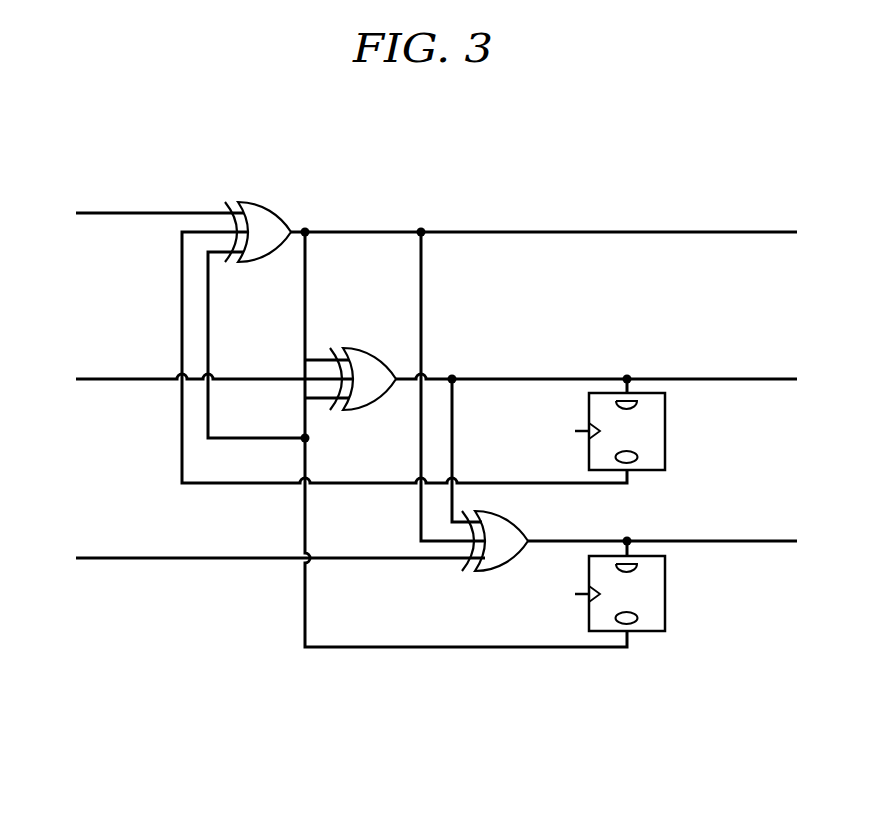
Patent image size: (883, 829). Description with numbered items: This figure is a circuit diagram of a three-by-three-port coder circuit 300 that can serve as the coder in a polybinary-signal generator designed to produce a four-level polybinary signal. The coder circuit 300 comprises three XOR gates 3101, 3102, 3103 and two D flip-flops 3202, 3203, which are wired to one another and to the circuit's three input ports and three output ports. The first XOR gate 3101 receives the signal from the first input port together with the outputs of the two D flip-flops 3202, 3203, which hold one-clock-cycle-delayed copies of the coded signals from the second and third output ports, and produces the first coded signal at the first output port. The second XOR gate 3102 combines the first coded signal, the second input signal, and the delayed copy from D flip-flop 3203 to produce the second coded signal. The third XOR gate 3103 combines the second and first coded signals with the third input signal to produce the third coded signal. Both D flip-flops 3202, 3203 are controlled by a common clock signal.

The coder circuit 300 is at (438, 111).
The XOR gate 3101 is at (259, 204).
The XOR gate 3102 is at (366, 348).
The XOR gate 3103 is at (490, 571).
The D flip-flop 3202 is at (665, 431).
The D flip-flop 3203 is at (665, 593).